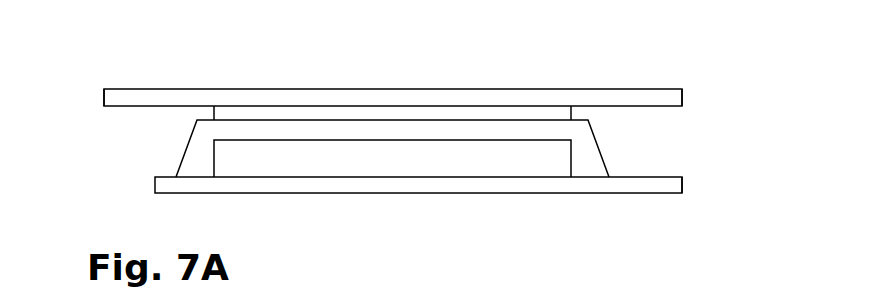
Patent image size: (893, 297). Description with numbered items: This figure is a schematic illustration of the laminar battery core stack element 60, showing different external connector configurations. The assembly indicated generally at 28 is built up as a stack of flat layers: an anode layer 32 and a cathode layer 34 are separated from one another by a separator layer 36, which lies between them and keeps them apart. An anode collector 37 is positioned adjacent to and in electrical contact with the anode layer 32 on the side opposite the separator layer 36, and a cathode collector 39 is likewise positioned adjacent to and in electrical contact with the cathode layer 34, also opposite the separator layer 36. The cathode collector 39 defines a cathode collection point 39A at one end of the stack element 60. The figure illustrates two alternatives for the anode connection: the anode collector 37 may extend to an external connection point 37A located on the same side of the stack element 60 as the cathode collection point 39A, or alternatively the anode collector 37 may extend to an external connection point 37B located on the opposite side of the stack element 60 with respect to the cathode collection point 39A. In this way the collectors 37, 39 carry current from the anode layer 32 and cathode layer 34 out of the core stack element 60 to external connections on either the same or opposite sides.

The sensor assembly 28 is at (84, 41).
The core stack element 60 is at (717, 85).
The anode collector 37 is at (463, 88).
The external connection point 37A is at (640, 93).
The external connection point 37B is at (150, 94).
The anode layer 32 is at (313, 112).
The separator layer 36 is at (193, 168).
The cathode layer 34 is at (414, 171).
The cathode collector 39 is at (270, 192).
The cathode collection point 39A is at (660, 187).